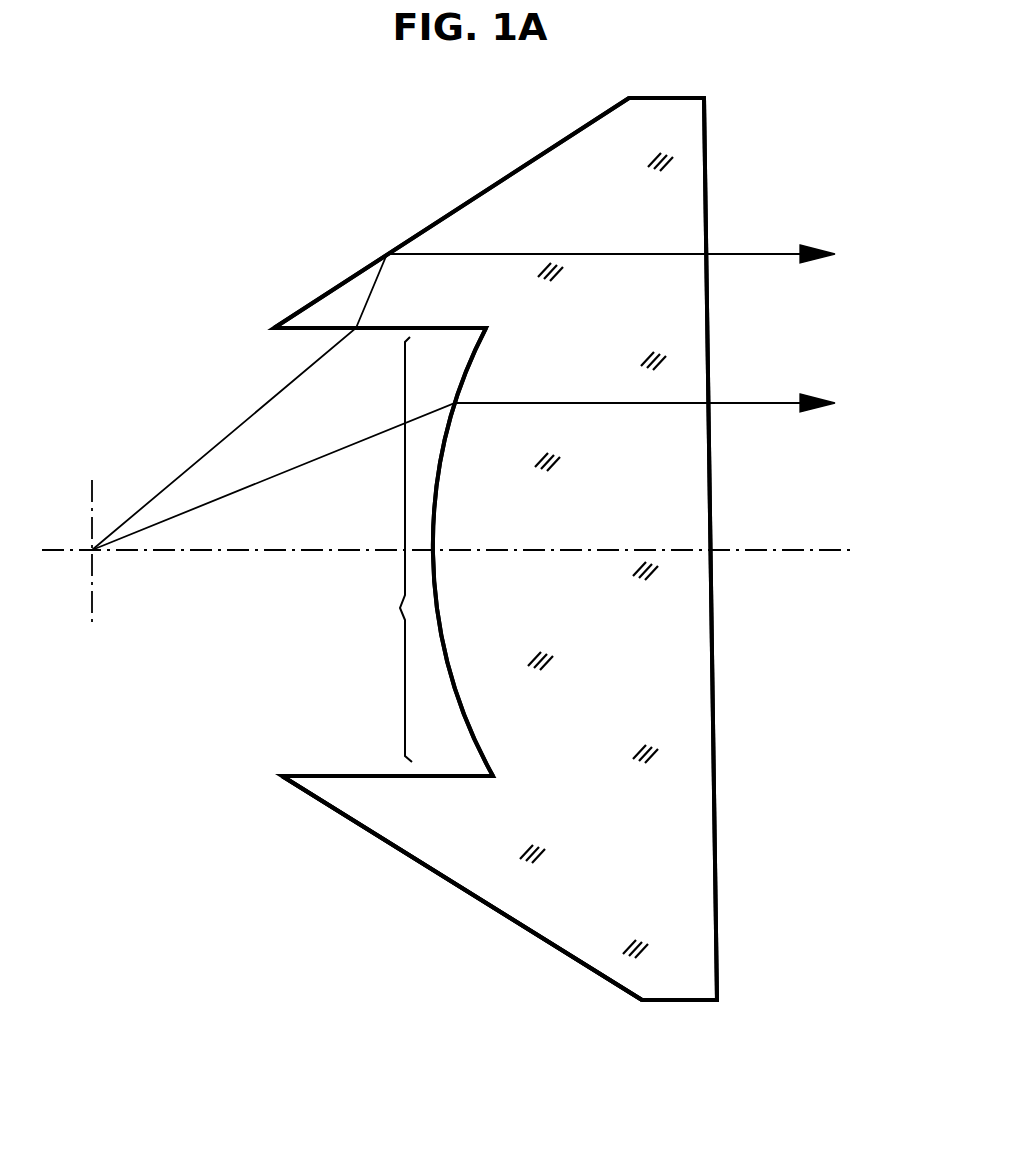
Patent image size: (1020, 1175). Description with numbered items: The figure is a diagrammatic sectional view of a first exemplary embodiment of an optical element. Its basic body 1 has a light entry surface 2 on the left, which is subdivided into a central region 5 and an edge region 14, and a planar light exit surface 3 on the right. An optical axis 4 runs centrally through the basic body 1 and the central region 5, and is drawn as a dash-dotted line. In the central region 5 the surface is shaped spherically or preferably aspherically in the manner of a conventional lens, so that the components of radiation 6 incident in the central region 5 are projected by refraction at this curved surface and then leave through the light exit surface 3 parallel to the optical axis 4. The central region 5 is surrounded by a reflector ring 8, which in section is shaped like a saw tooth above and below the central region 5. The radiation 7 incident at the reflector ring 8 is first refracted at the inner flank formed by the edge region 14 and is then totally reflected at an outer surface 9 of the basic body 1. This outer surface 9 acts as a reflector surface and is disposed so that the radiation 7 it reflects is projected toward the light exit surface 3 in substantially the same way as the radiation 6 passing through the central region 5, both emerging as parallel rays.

The basic body 1 is at (674, 118).
The light entry surface 2 is at (373, 334).
The light exit surface 3 is at (718, 887).
The optical axis 4 is at (838, 547).
The central region 5 is at (390, 549).
The radiation 6 is at (190, 515).
The radiation 7 is at (192, 469).
The reflector ring 8 is at (590, 912).
The outer surface 9 is at (512, 168).
The edge region 14 is at (290, 330).